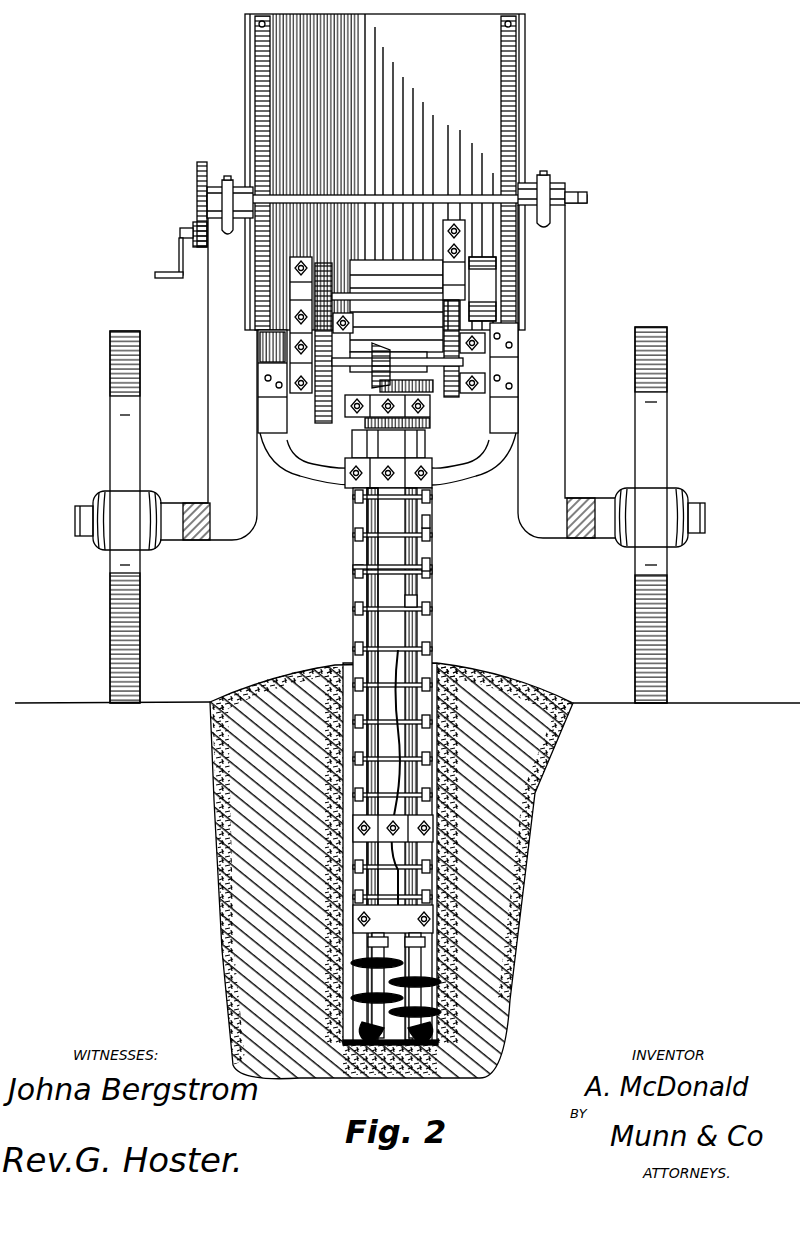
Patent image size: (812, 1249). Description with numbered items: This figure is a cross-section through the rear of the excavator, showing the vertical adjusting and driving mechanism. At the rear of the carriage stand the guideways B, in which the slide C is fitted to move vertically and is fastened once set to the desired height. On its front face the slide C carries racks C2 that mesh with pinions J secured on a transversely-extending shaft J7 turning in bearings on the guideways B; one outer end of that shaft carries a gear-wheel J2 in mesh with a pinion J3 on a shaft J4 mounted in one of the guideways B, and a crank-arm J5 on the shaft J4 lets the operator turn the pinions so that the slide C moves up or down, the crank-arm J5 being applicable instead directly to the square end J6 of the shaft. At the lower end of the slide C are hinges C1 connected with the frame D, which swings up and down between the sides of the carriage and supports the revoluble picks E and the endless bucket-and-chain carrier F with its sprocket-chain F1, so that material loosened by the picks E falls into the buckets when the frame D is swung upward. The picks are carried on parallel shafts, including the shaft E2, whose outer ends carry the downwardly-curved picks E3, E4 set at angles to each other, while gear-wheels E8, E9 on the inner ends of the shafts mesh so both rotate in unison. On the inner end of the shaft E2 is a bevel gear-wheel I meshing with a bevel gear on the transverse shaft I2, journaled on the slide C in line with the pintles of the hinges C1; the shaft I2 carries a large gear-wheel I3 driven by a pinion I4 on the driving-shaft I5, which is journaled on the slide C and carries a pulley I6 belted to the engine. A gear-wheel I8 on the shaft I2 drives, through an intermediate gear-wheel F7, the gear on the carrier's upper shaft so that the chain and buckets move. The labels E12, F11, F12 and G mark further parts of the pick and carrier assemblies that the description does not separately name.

The guideways B is at (208, 404).
The slide C is at (385, 172).
The hinges C1 is at (262, 352).
The racks C2 is at (257, 118).
The frame D is at (328, 478).
The revoluble picks E is at (396, 985).
The shaft E2 is at (375, 634).
The downwardly-curved pick E3 is at (362, 1047).
The downwardly-curved pick E4 is at (412, 1047).
The gear-wheel E8 is at (354, 434).
The gear-wheel E9 is at (428, 426).
The shaft guide E12 is at (418, 600).
The endless carrier F is at (357, 594).
The sprocket-chain F1 is at (462, 322).
The intermediate gear-wheel F7 is at (357, 566).
The guide clip F11 is at (433, 565).
The guide clip F12 is at (426, 518).
The cable G is at (402, 664).
The bevel gear-wheel I is at (370, 350).
The transversely-extending shaft I2 is at (436, 360).
The large gear-wheel I3 is at (318, 420).
The pinion I4 is at (322, 266).
The driving-shaft I5 is at (378, 292).
The pulley I6 is at (497, 273).
The gear-wheel I8 is at (432, 405).
The pinions J is at (253, 222).
The gear-wheel J2 is at (196, 178).
The pinion J3 is at (200, 250).
The shaft J4 is at (180, 232).
The crank-arm J5 is at (179, 266).
The outer square end J6 is at (588, 198).
The lifting shaft J7 is at (418, 198).